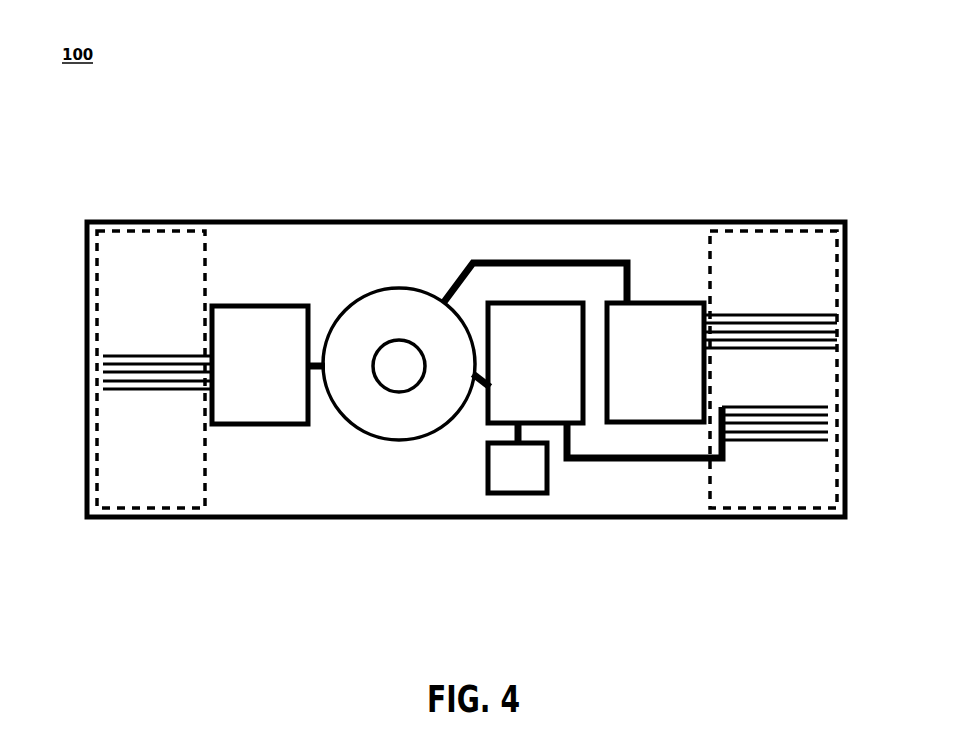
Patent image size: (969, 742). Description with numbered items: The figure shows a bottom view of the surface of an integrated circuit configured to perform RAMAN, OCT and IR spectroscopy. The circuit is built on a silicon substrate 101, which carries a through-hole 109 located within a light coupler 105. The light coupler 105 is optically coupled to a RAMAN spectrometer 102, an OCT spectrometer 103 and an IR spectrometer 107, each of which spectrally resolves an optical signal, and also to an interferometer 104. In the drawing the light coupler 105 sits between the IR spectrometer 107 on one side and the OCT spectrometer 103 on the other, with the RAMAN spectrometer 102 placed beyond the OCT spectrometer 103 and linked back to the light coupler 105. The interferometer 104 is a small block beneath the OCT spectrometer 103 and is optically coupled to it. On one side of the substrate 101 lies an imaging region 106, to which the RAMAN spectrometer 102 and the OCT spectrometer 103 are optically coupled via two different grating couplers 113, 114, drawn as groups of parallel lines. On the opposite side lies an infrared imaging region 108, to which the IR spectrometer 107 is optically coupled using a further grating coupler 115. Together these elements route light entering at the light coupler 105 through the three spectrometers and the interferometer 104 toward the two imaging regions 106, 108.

The silicon substrate 101 is at (445, 518).
The RAMAN spectrometer 102 is at (637, 302).
The OCT spectrometer 103 is at (548, 426).
The interferometer 104 is at (518, 496).
The light coupler 105 is at (355, 298).
The imaging region 106 is at (716, 258).
The IR spectrometer 107 is at (272, 427).
The infrared imaging region 108 is at (207, 488).
The through-hole 109 is at (400, 339).
The grating coupler 113 is at (770, 330).
The grating coupler 114 is at (772, 430).
The grating coupler 115 is at (134, 370).